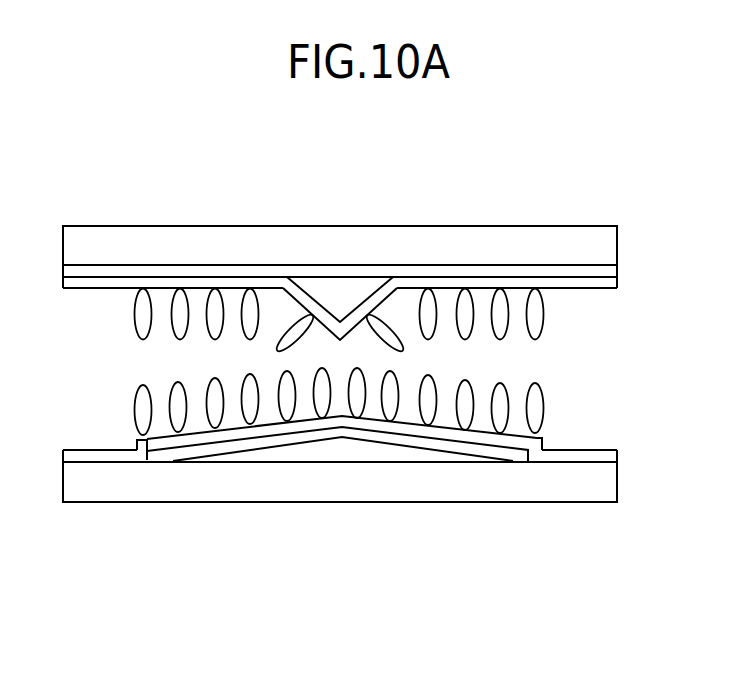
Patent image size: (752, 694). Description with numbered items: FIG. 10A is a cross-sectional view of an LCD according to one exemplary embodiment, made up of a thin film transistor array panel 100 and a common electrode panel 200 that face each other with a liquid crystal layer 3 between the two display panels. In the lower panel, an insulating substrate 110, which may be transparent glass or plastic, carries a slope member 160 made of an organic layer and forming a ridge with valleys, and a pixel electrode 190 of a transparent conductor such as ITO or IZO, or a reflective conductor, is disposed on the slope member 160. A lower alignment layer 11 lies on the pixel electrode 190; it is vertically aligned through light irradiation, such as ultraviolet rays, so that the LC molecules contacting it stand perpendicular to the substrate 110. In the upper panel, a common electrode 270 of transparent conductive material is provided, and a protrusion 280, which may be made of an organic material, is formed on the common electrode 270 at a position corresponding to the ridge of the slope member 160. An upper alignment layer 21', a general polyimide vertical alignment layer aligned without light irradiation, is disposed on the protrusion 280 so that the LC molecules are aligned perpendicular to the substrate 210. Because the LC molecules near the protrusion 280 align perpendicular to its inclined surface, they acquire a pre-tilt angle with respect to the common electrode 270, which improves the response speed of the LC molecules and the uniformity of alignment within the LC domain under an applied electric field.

The common electrode panel 200 is at (370, 263).
The substrate 210 is at (438, 245).
The common electrode 270 is at (251, 272).
The protrusions 280 is at (339, 296).
The upper alignment layer 21' is at (340, 320).
The liquid crystal layer 3 is at (621, 296).
The thin film transistor array panel 100 is at (368, 488).
The insulating substrate 110 is at (421, 480).
The lower alignment layer 11 is at (579, 456).
The pixel electrodes 190 is at (278, 440).
The slope members 160 is at (340, 448).